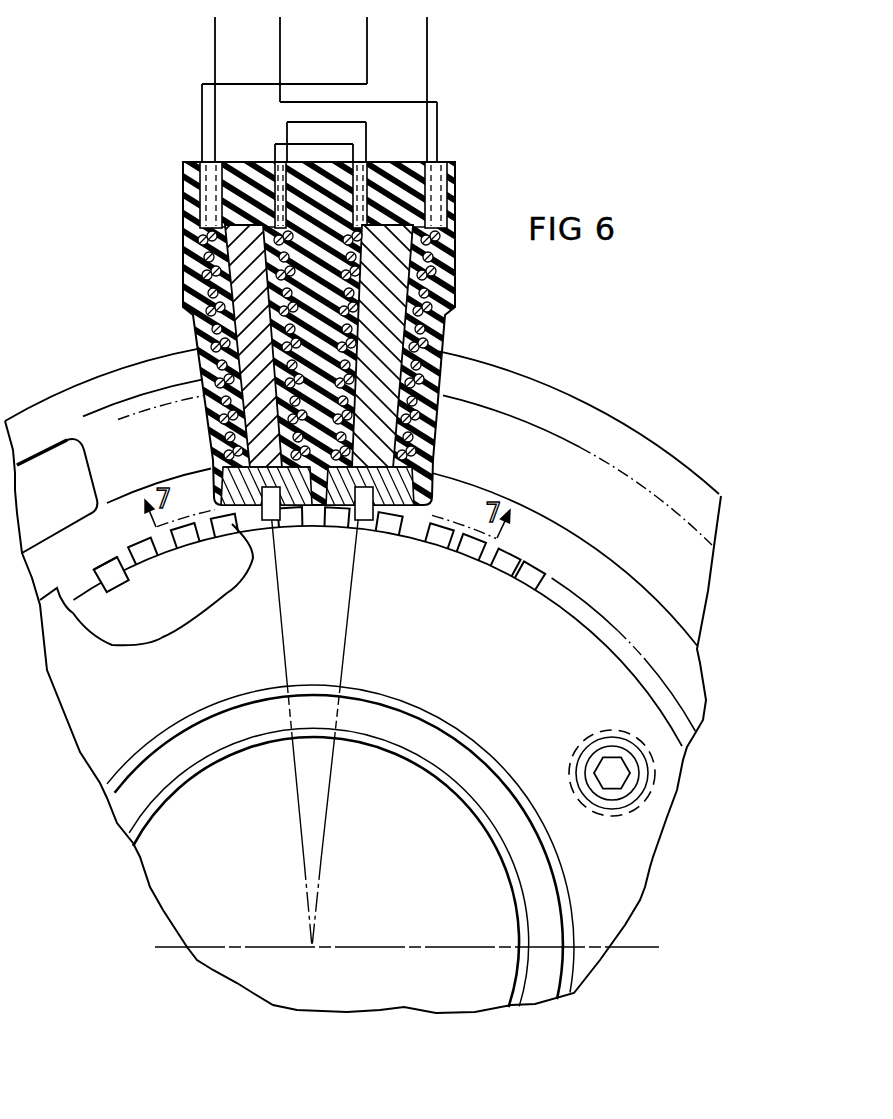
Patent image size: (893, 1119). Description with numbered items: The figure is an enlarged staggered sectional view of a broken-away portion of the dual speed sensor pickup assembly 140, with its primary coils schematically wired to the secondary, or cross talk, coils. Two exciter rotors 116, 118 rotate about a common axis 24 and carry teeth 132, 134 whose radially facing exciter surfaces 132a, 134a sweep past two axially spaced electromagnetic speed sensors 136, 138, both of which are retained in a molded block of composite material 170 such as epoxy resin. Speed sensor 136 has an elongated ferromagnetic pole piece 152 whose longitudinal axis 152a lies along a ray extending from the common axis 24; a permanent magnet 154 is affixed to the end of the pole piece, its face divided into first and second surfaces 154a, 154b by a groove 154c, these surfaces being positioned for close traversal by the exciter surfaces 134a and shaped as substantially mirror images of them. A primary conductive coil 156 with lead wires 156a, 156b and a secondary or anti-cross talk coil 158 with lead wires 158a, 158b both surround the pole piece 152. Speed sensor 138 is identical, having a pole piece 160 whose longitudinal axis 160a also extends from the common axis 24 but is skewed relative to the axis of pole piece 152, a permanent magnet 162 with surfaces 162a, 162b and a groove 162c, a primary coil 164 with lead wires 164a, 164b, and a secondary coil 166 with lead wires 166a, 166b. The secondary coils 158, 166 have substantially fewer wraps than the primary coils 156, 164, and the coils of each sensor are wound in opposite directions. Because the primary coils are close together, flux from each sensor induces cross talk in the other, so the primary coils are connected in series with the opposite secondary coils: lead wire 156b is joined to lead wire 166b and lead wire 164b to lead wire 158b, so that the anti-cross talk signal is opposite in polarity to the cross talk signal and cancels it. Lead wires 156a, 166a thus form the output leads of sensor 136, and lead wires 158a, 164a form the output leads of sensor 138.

The common axis 24 is at (407, 748).
The exciter rotor 116 is at (533, 685).
The exciter rotor 118 is at (147, 629).
The teeth 132 is at (518, 580).
The exciter surfaces 132a is at (510, 565).
The teeth 134 is at (100, 574).
The exciter surfaces 134a is at (118, 590).
The speed sensor 136 is at (183, 220).
The speed sensor 138 is at (457, 203).
The dual speed sensor pickup assembly 140 is at (366, 351).
The pole piece 152 is at (177, 383).
The longitudinal axis 152a is at (284, 643).
The permanent magnet 154 is at (305, 486).
The first surface 154a is at (247, 527).
The second surface 154b is at (277, 533).
The groove 154c is at (280, 543).
The primary conductive coil 156 is at (187, 300).
The lead wire 156a is at (215, 40).
The lead wire 156b is at (277, 148).
The secondary or anti-cross talk conductive coil 158 is at (200, 255).
The lead wire 158a is at (367, 45).
The lead wire 158b is at (287, 125).
The pole piece 160 is at (443, 389).
The longitudinal axis 160a is at (346, 646).
The permanent magnet 162 is at (336, 486).
The surface 162a is at (348, 530).
The surface 162b is at (398, 548).
The groove 162c is at (378, 530).
The primary conductive coil 164 is at (445, 322).
The lead wire 164a is at (430, 32).
The lead wire 164b is at (350, 135).
The secondary or anti-cross talk conductive coil 166 is at (455, 282).
The lead wire 166a is at (282, 32).
The lead wire 166b is at (368, 134).
The molded block of composite material 170 is at (187, 173).